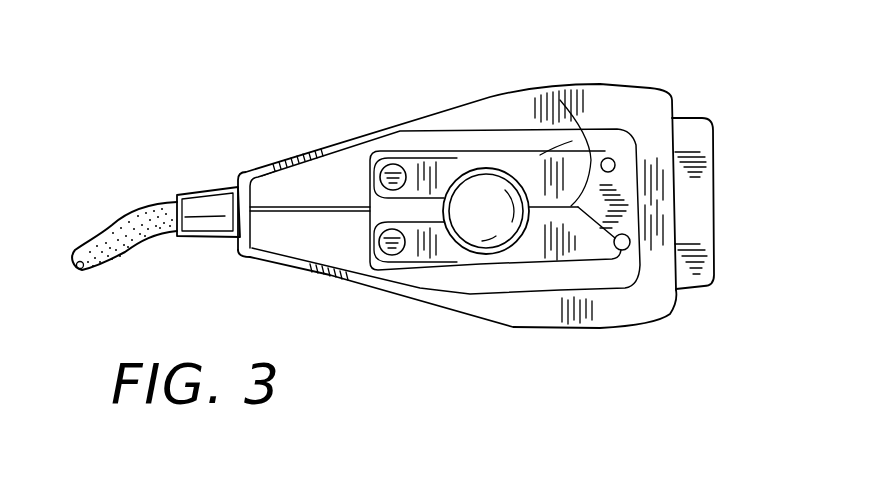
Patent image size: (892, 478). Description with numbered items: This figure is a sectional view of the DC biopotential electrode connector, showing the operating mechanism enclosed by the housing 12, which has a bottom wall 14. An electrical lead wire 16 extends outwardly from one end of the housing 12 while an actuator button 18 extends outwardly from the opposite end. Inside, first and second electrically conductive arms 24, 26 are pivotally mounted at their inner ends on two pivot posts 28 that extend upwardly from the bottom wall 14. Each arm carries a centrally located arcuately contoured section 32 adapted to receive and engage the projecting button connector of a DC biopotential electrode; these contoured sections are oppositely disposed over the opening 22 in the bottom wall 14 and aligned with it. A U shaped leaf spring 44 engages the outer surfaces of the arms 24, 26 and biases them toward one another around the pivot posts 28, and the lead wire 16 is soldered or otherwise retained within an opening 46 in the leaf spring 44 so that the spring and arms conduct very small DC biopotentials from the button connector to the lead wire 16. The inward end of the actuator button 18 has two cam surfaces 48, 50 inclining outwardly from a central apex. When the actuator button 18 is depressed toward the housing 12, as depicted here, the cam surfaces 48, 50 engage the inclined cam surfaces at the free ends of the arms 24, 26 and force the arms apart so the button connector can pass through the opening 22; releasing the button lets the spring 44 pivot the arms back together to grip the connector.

The housing 12 is at (613, 100).
The bottom wall 14 is at (591, 328).
The electrical lead wire 16 is at (125, 220).
The actuator button 18 is at (713, 227).
The opening 22 is at (467, 197).
The first electrically conductive arm 24 is at (560, 100).
The second electrically conductive arm 26 is at (528, 247).
The pivot posts 28 is at (388, 175).
The arcuately contoured section 32 is at (517, 177).
The U shaped leaf spring 44 is at (368, 183).
The opening in leaf spring 46 is at (270, 210).
The cam surface 48 is at (578, 205).
The cam surface 50 is at (633, 243).